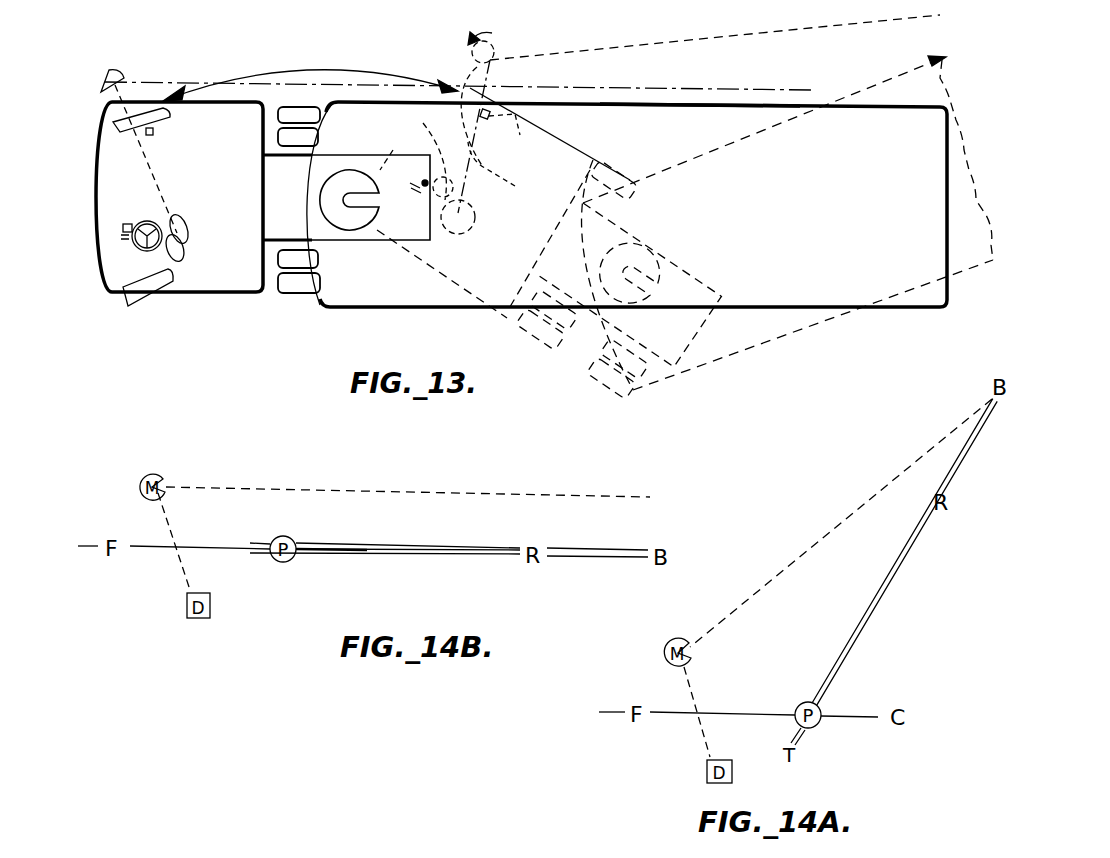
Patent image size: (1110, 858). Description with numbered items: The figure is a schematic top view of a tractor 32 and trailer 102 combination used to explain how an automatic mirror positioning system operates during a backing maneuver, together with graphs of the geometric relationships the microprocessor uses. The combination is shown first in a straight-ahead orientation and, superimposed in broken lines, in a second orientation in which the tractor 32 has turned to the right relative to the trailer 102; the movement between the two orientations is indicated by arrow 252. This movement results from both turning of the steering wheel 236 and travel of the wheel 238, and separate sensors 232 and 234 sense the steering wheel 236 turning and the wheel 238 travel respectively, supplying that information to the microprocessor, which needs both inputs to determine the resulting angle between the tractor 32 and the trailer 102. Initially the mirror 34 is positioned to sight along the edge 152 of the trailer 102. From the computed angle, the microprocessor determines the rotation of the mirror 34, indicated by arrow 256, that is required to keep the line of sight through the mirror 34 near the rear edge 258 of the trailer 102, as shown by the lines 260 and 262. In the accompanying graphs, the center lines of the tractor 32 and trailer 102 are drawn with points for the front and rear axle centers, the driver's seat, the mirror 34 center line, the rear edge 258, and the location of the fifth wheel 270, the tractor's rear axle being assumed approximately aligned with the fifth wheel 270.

The tractor 32 is at (172, 289).
The mirror 34 is at (107, 76).
The trailer 102 is at (328, 310).
The edge of the trailer 152 is at (702, 106).
The sensor 232 is at (128, 224).
The sensor 234 is at (158, 137).
The steering wheel 236 is at (157, 222).
The wheel 238 is at (158, 114).
The arrow 252 is at (311, 70).
The arrow 256 is at (492, 33).
The rear edge of the trailer 258 is at (930, 60).
The line 260 is at (513, 175).
The line 262 is at (753, 36).
The fifth wheel 270 is at (318, 191).